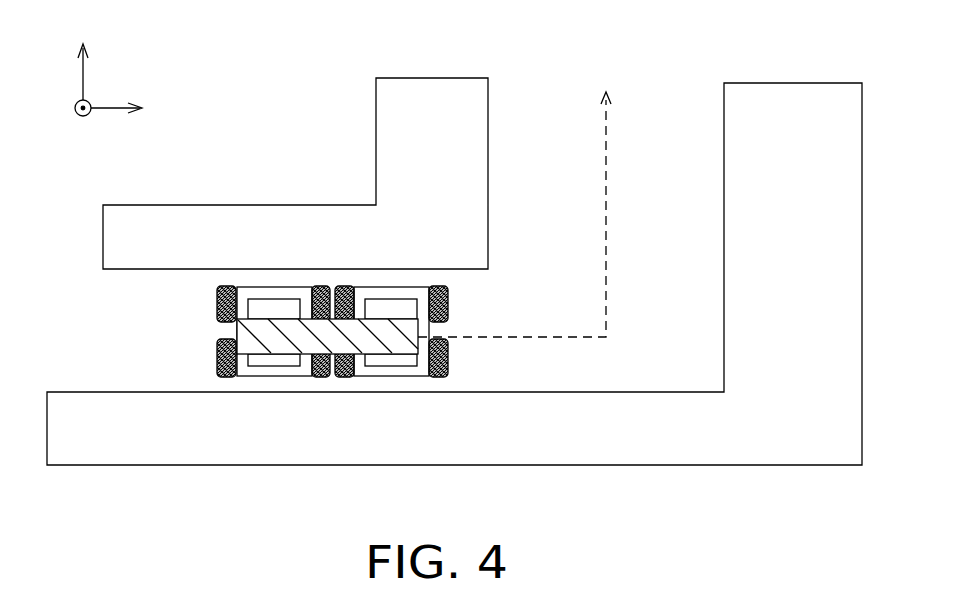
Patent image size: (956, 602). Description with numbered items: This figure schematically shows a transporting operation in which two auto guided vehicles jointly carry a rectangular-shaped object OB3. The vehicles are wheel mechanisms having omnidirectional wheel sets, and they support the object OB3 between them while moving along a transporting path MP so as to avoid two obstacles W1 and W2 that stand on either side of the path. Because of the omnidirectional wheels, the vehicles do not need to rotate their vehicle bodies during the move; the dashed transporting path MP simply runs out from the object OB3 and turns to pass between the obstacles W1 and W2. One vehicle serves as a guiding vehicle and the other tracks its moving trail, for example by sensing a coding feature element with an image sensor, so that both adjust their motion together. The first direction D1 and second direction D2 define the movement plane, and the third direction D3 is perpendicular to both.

The obstacle W1 is at (432, 78).
The obstacle W2 is at (791, 83).
The transporting path MP is at (606, 183).
The object OB3 is at (380, 353).
The first direction D1 is at (133, 107).
The second direction D2 is at (86, 51).
The third direction D3 is at (64, 114).